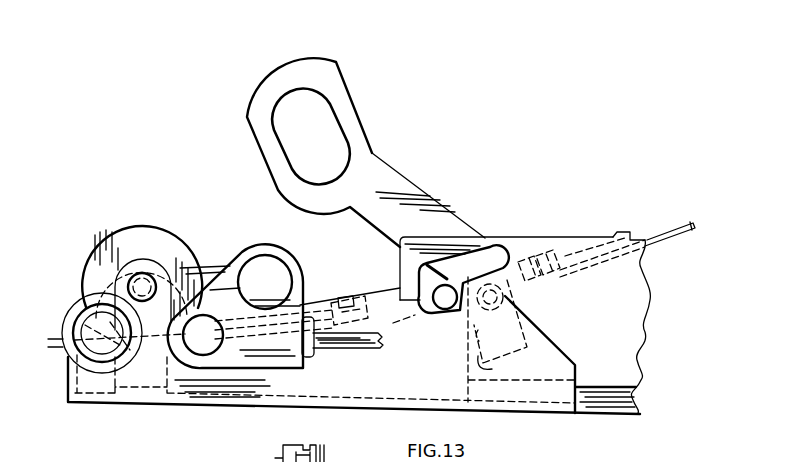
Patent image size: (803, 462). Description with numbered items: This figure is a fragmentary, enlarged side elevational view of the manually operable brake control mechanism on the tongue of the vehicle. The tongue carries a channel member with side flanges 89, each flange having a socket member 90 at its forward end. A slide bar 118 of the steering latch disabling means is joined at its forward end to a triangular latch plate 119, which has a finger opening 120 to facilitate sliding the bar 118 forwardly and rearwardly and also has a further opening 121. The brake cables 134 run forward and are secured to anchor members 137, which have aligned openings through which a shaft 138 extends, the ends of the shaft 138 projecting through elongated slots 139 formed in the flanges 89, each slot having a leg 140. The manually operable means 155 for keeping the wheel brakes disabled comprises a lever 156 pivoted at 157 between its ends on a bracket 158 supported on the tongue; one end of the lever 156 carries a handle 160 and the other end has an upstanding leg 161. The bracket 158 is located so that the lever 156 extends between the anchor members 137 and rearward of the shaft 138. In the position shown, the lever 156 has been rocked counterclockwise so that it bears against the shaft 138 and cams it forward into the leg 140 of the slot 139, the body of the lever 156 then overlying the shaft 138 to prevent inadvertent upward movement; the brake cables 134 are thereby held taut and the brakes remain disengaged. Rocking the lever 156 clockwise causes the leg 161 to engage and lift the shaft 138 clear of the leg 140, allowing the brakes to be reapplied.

The side flange 89 is at (628, 303).
The socket member 90 is at (75, 303).
The slide bar 118 is at (363, 352).
The triangular latch plate 119 is at (270, 348).
The finger opening 120 is at (258, 265).
The opening 121 is at (208, 348).
The brake cable 134 is at (677, 223).
The anchor member 137 is at (505, 255).
The shaft 138 is at (447, 303).
The elongated slot 139 is at (488, 250).
The leg of slot 140 is at (415, 303).
The manually operable means 155 is at (410, 148).
The lever 156 is at (419, 190).
The pivot 157 is at (427, 326).
The bracket 158 is at (543, 357).
The handle 160 is at (293, 72).
The upstanding leg 161 is at (492, 367).